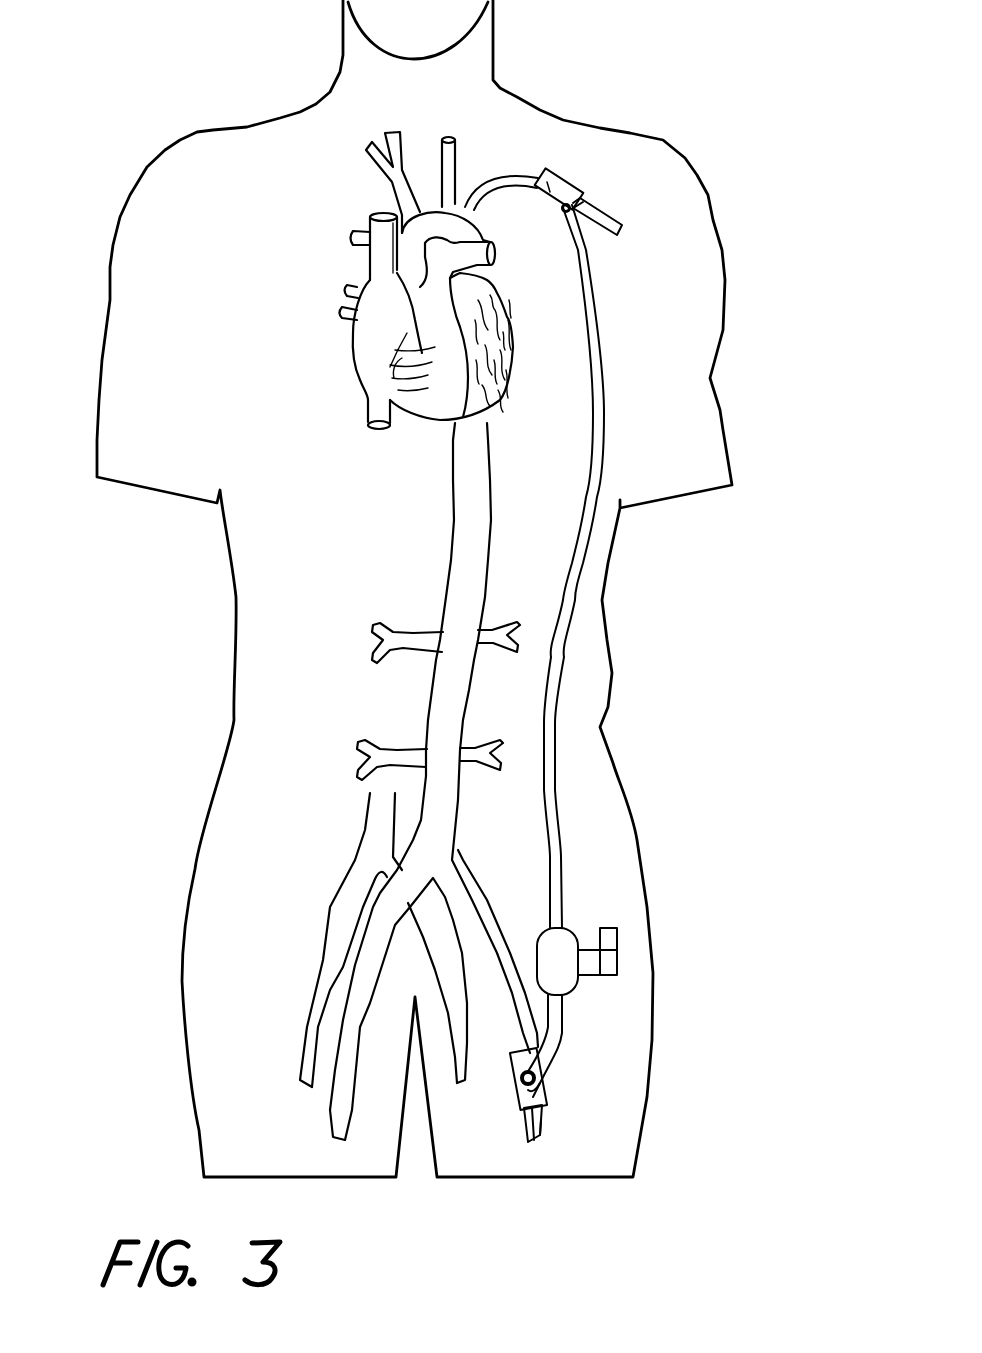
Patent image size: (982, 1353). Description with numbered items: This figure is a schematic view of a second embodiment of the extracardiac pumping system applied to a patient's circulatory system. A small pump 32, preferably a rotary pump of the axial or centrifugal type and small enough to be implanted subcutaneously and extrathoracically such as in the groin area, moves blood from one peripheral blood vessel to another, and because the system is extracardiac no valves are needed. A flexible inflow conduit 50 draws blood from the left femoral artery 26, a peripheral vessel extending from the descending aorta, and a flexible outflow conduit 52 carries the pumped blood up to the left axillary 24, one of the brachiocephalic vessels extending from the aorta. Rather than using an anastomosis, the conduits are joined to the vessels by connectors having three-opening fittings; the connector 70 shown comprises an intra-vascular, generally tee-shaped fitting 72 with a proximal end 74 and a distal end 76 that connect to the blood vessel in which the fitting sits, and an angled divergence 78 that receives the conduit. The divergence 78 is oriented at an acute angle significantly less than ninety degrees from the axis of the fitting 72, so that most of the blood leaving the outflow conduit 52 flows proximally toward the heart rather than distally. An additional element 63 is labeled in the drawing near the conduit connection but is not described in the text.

The left axillary 24 is at (607, 203).
The left femoral artery 26 is at (545, 1120).
The pump 32 is at (535, 940).
The inflow conduit 50 is at (565, 1010).
The outflow conduit 52 is at (597, 315).
The hub assembly 63 is at (560, 1086).
The second connector 70 is at (564, 152).
The generally-tee-shaped fitting 72 is at (563, 183).
The proximal end 74 is at (543, 190).
The distal end 76 is at (577, 207).
The angled divergence 78 is at (565, 210).